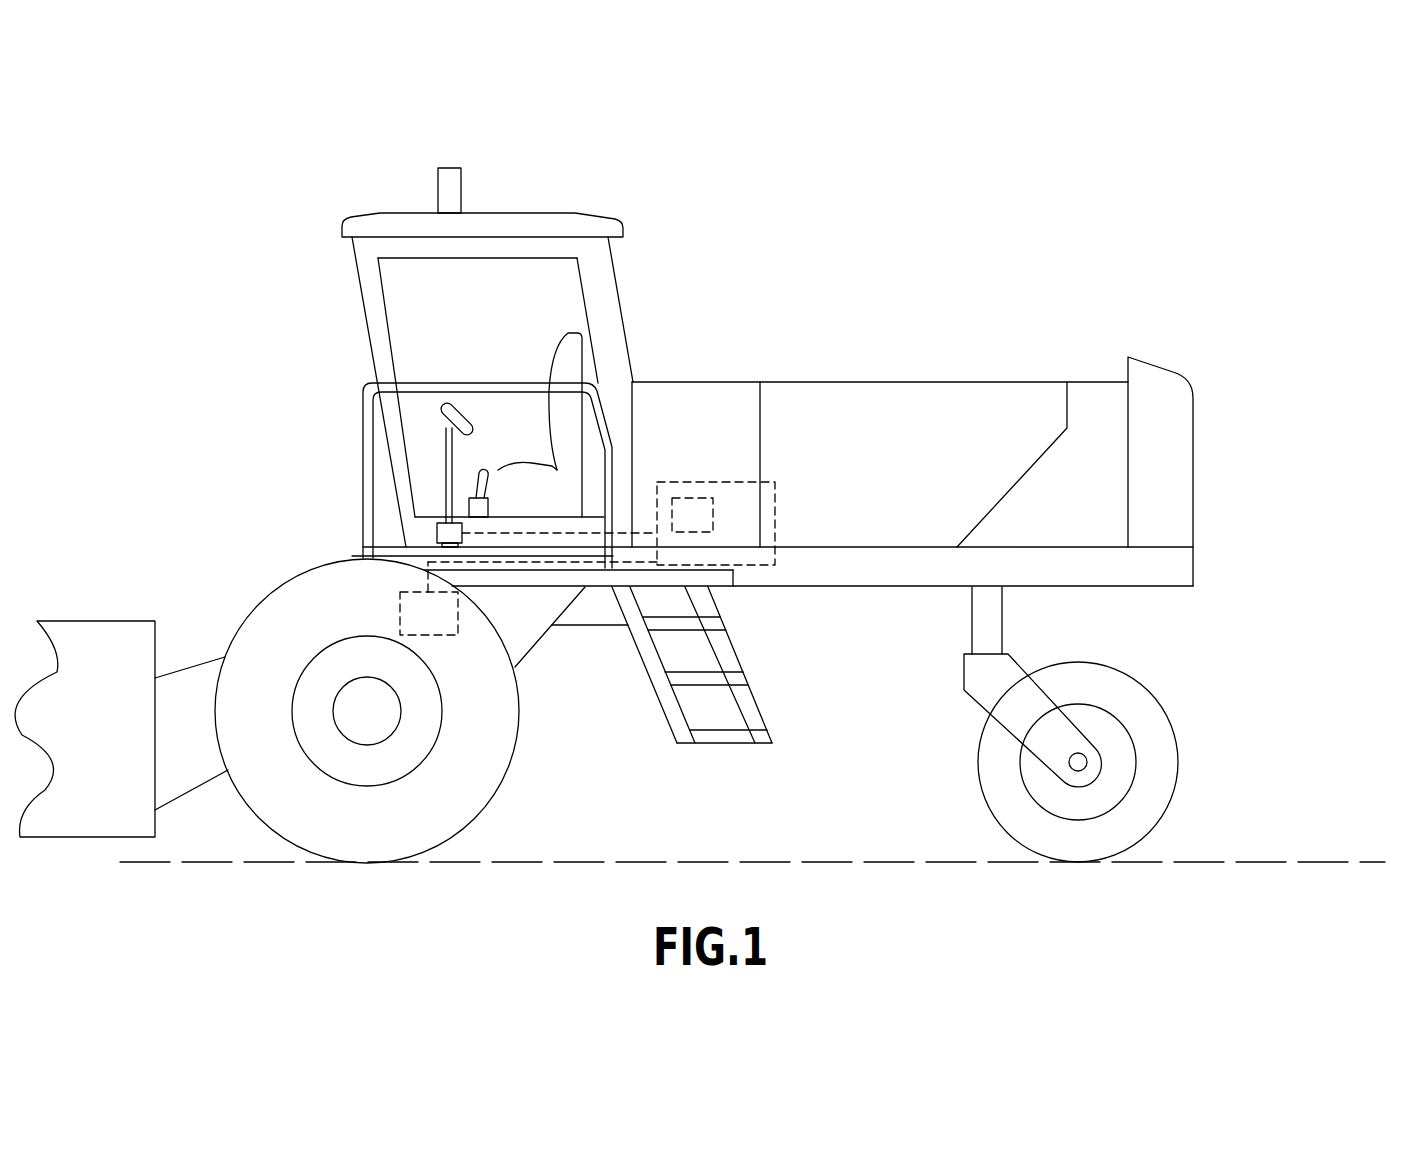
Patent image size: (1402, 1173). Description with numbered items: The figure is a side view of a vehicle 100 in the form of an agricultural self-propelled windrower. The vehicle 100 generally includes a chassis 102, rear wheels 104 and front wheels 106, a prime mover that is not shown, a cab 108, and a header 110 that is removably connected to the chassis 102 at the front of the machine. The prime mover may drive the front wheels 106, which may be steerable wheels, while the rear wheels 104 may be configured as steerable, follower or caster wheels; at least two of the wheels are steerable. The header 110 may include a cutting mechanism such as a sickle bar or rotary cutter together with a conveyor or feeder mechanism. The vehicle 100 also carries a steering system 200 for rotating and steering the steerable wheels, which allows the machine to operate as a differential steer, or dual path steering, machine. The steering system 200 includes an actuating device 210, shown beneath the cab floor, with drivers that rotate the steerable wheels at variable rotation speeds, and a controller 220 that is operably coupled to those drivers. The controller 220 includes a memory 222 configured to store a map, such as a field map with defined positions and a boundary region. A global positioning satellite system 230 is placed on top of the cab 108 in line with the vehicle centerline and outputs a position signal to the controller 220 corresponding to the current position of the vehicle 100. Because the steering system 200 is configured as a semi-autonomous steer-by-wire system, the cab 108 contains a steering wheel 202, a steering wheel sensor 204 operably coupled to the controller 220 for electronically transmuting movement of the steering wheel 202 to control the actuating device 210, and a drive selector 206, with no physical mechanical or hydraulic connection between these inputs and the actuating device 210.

The vehicle 100 is at (998, 346).
The chassis 102 is at (1170, 372).
The rear wheels 104 is at (1133, 812).
The front wheels 106 is at (300, 825).
The cab 108 is at (480, 213).
The header 110 is at (95, 621).
The steering system 200 is at (647, 604).
The steering wheel 202 is at (420, 419).
The steering wheel sensor 204 is at (437, 533).
The drive selector 206 is at (468, 502).
The actuating device 210 is at (400, 606).
The controller 220 is at (772, 482).
The memory 222 is at (683, 497).
The global positioning satellite (GPS) system 230 is at (449, 168).